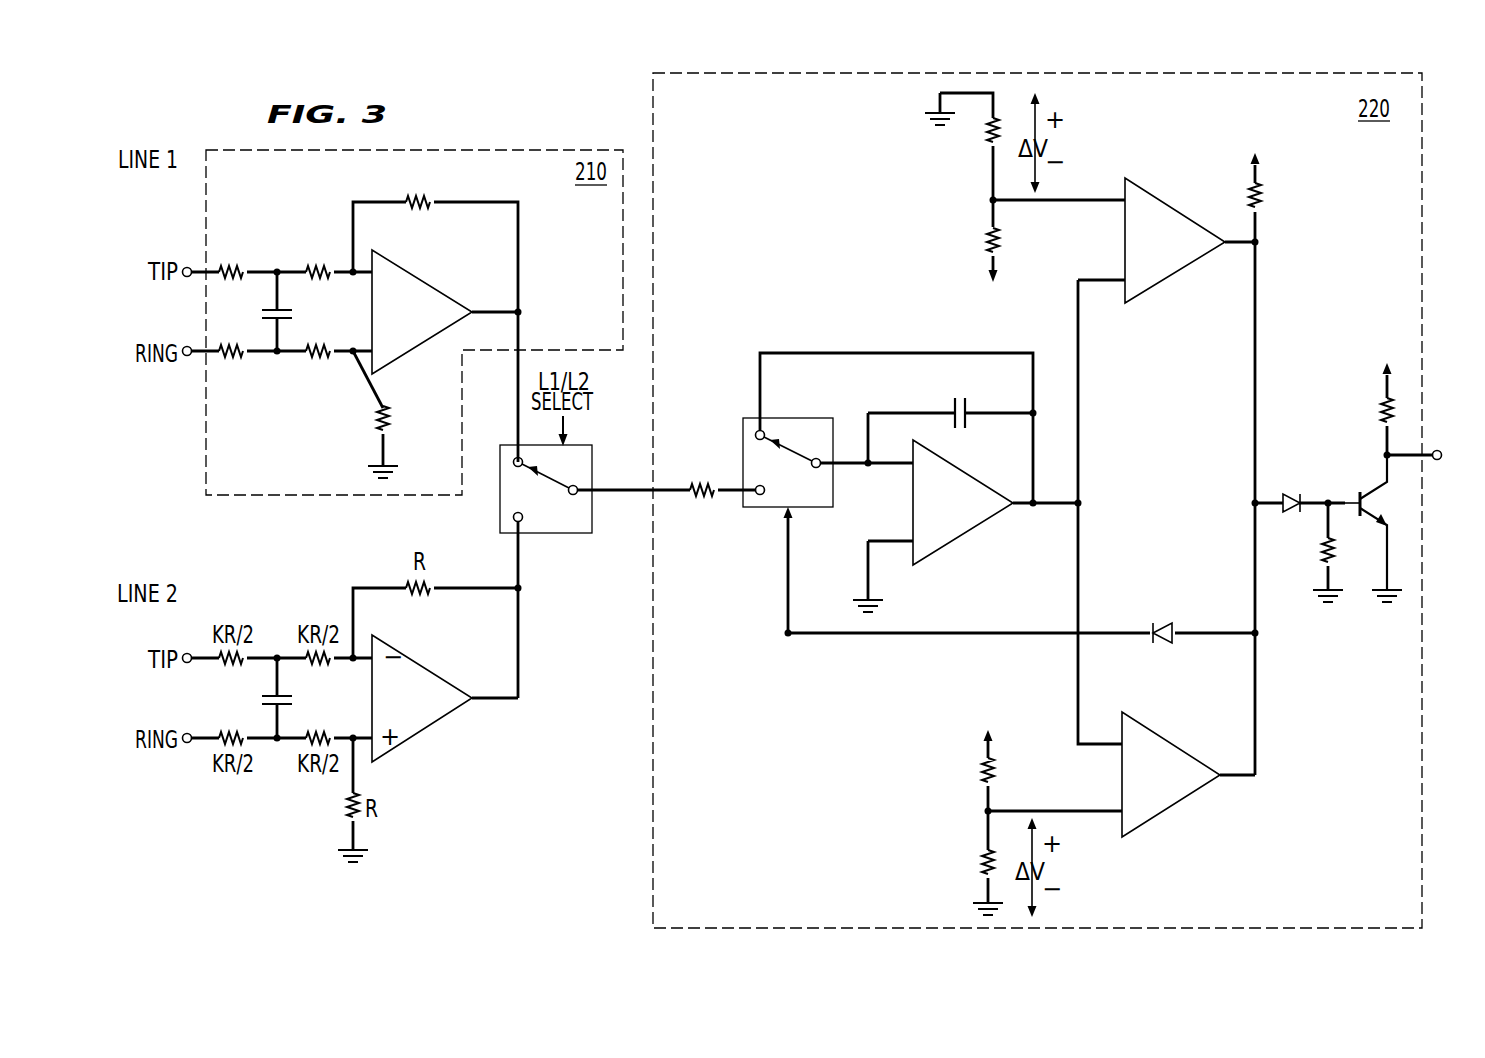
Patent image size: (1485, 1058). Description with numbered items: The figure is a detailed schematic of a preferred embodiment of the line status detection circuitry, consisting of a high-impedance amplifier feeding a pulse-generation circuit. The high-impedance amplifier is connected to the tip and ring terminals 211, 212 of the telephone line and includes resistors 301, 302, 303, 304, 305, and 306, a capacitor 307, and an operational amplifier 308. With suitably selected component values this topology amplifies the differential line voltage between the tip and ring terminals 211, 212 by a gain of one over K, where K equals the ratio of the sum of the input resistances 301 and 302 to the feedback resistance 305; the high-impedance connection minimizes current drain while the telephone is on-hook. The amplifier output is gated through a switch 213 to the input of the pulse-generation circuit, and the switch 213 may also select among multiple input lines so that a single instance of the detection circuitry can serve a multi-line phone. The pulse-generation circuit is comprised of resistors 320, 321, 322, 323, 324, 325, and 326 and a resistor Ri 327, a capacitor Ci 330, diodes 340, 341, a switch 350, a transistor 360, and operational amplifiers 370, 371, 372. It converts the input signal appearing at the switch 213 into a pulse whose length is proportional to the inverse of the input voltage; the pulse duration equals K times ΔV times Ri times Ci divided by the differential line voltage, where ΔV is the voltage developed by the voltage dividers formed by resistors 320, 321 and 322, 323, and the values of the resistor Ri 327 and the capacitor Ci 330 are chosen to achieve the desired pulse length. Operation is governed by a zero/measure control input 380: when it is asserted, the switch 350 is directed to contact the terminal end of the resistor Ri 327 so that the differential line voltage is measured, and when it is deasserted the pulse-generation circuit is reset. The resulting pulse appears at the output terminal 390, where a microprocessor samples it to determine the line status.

The tip terminal 211 is at (185, 272).
The ring terminal 212 is at (185, 353).
The switch 213 is at (545, 537).
The resistor 301 is at (249, 278).
The resistor 302 is at (325, 278).
The resistor 303 is at (246, 354).
The resistor 304 is at (333, 354).
The resistor 305 is at (434, 197).
The resistor 306 is at (390, 439).
The capacitor 307 is at (298, 317).
The operational amplifier 308 is at (426, 279).
The resistor 320 is at (980, 141).
The resistor 321 is at (978, 235).
The resistor 322 is at (975, 773).
The resistor 323 is at (978, 876).
The resistor 324 is at (1269, 200).
The resistor 325 is at (1375, 426).
The resistor 326 is at (1320, 561).
The resistor Ri 327 is at (702, 497).
The capacitor Ci 330 is at (970, 430).
The diode 340 is at (1160, 630).
The diode 341 is at (1298, 491).
The switch 350 is at (796, 418).
The transistor 360 is at (1372, 485).
The operational amplifier 370 is at (970, 535).
The operational amplifier 371 is at (1181, 280).
The operational amplifier 372 is at (1193, 806).
The zero/measure control input 380 is at (809, 705).
The output terminal 390 is at (1440, 451).